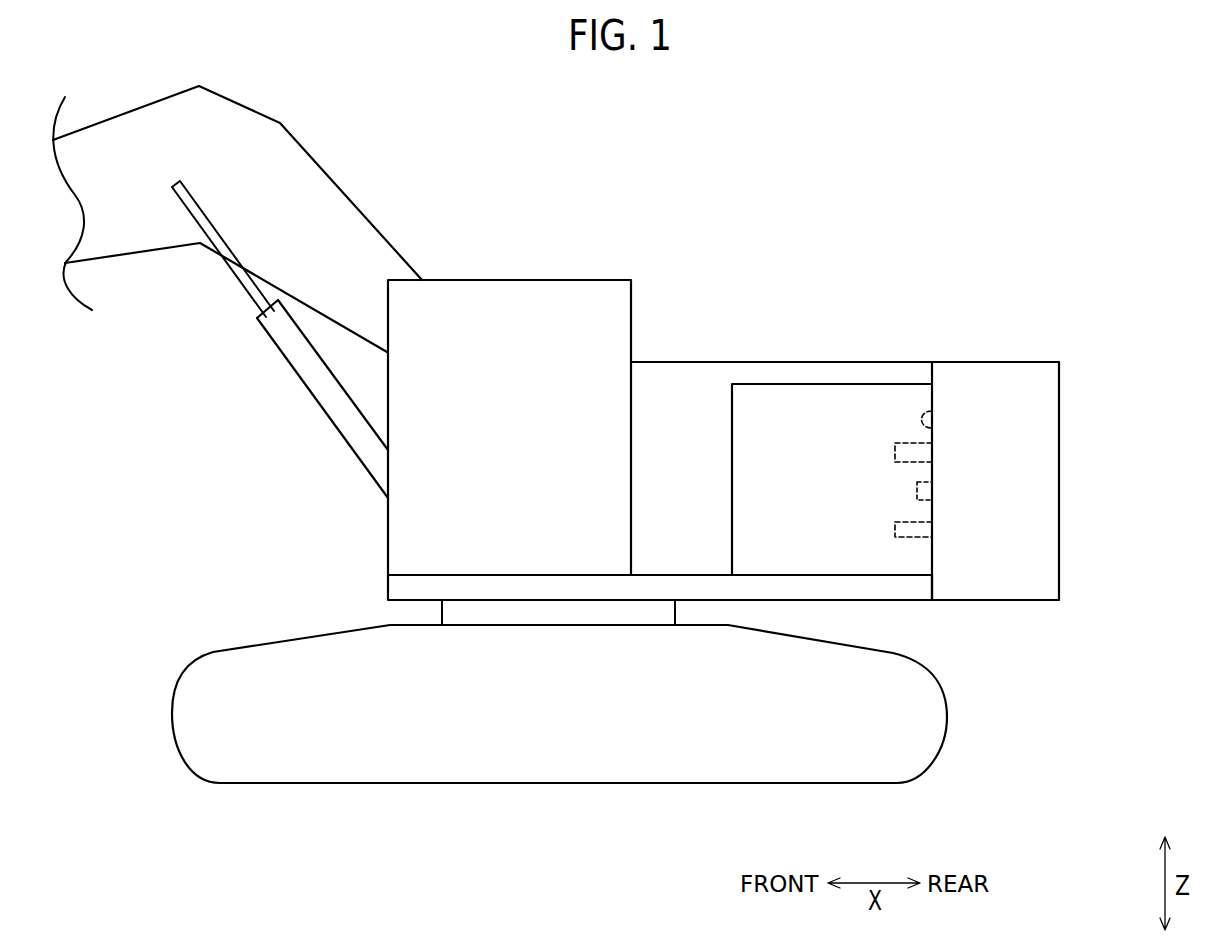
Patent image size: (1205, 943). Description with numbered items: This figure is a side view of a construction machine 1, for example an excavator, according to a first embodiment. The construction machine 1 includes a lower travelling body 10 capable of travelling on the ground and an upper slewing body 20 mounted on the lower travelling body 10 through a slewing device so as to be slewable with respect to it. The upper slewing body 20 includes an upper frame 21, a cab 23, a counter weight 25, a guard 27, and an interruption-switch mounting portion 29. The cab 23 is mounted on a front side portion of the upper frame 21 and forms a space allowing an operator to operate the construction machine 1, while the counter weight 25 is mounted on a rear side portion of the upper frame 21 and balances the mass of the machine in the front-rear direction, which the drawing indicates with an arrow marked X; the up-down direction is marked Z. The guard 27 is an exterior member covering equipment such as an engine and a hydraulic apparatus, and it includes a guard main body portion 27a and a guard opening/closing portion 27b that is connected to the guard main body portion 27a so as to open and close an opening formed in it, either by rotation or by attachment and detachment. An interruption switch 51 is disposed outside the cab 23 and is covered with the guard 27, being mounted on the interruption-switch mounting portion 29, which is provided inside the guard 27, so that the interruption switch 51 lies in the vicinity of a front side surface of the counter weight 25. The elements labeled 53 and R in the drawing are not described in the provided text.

The construction machine 1 is at (1074, 159).
The lower travelling body 10 is at (187, 705).
The upper slewing body 20 is at (190, 577).
The upper frame 21 is at (397, 590).
The cab 23 is at (523, 298).
The counter weight 25 is at (1000, 370).
The guard 27 is at (843, 273).
The guard main body portion 27a is at (753, 367).
The guard opening/closing portion 27b is at (822, 393).
The interruption-switch mounting portion 29 is at (932, 412).
The interruption switch 51 is at (918, 500).
The hydraulic device 53 is at (916, 462).
The region R is at (913, 537).